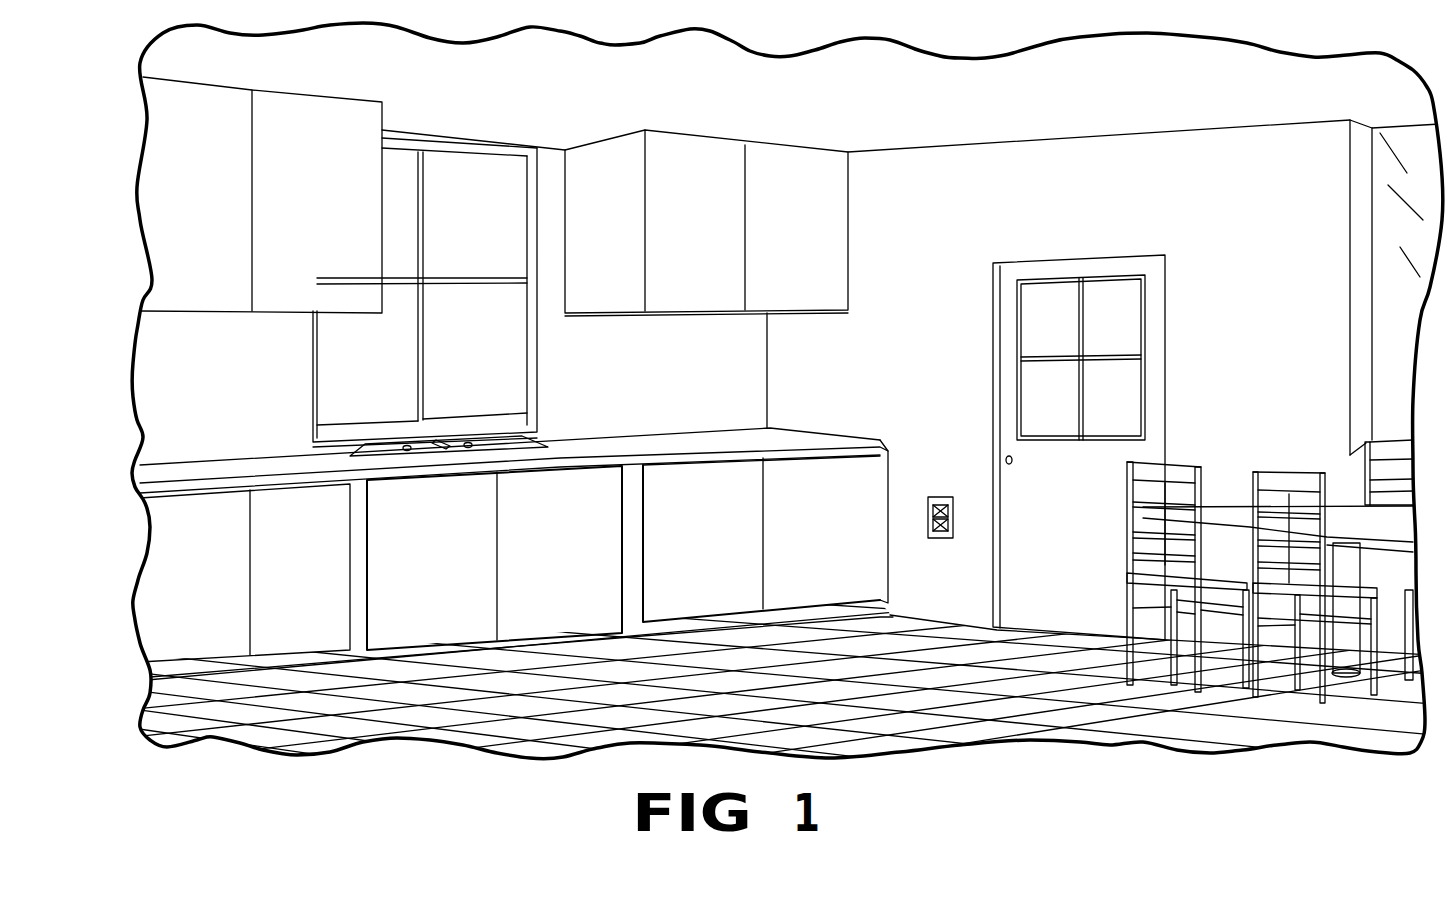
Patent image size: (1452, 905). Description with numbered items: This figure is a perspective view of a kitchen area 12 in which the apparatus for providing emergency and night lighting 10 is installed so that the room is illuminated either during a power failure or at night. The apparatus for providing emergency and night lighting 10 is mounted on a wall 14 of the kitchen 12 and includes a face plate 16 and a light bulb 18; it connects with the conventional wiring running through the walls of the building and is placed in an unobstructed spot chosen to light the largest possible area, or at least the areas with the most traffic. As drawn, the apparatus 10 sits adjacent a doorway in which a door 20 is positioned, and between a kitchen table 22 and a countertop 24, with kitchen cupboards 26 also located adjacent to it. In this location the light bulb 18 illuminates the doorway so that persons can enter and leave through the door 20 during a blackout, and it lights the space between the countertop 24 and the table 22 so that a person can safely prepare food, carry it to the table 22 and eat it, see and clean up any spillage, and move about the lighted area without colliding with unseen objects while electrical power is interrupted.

The apparatus for providing emergency and night lighting 10 is at (950, 506).
The kitchen area 12 is at (1117, 163).
The wall 14 is at (914, 592).
The face plate 16 is at (953, 513).
The light bulb 18 is at (953, 527).
The door 20 is at (1157, 335).
The kitchen table 22 is at (1238, 510).
The countertop 24 is at (783, 436).
The kitchen cupboards 26 is at (826, 218).